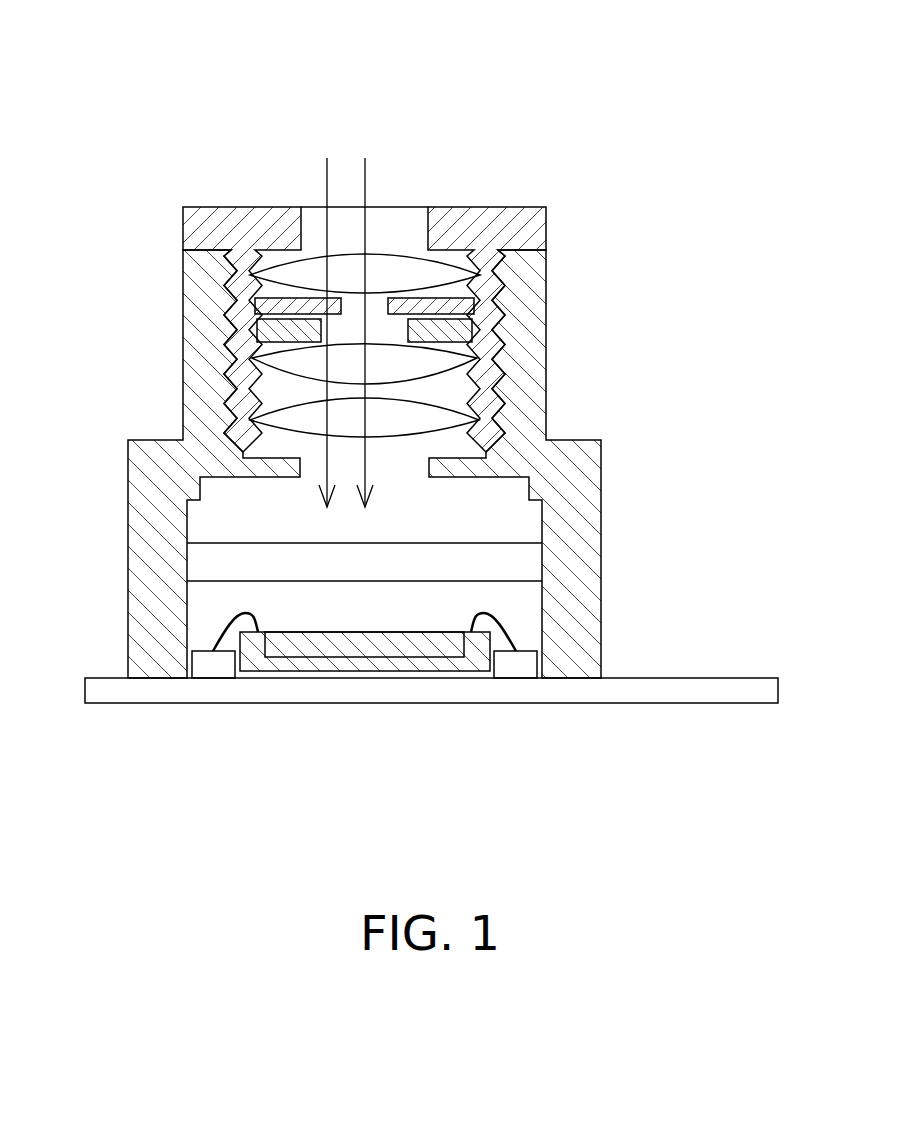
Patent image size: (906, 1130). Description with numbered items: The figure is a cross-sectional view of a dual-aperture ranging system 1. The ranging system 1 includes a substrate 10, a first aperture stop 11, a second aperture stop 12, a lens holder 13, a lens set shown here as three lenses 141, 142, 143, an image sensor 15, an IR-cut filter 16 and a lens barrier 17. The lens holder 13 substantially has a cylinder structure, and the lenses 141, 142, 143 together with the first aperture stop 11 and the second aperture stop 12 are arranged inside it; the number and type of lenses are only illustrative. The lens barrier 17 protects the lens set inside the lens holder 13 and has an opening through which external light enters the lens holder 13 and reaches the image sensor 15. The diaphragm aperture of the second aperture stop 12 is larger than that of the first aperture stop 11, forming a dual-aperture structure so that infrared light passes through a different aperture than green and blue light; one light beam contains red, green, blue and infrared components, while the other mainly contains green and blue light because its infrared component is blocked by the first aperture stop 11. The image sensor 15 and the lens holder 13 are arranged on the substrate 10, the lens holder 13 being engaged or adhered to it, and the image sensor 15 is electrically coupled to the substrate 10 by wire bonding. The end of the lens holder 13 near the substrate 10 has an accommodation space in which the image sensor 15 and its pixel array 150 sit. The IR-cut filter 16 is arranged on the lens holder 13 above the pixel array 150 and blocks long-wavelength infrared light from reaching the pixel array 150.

The ranging system 1 is at (185, 70).
The substrate 10 is at (741, 693).
The first aperture stop 11 is at (465, 307).
The second aperture stop 12 is at (460, 332).
The lens holder 13 is at (562, 472).
The image sensor 15 is at (473, 660).
The pixel array 150 is at (335, 650).
The IR-cut filter 16 is at (505, 565).
The lens barrier 17 is at (522, 232).
The lens 141 is at (283, 273).
The lens 142 is at (285, 363).
The lens 143 is at (282, 417).